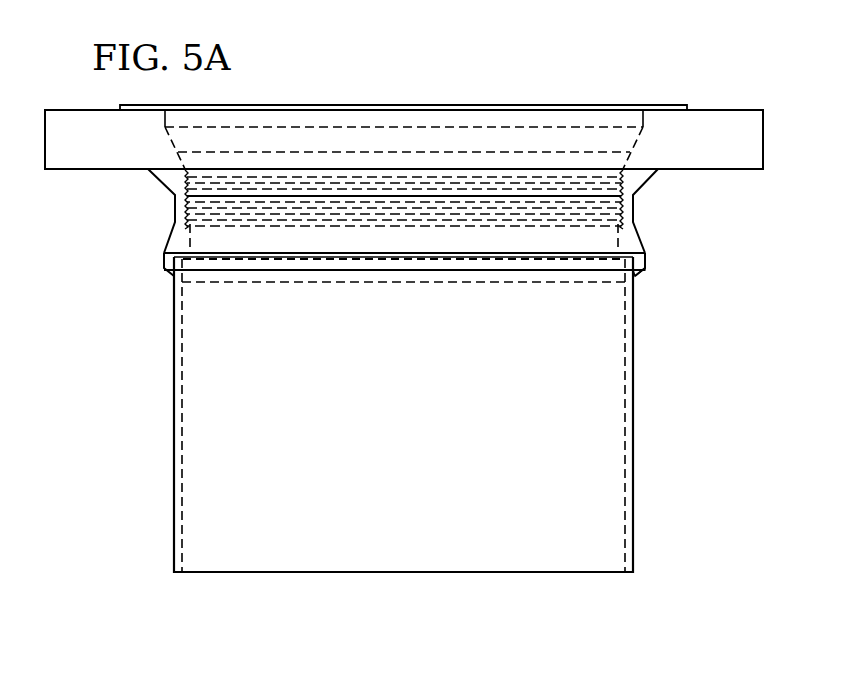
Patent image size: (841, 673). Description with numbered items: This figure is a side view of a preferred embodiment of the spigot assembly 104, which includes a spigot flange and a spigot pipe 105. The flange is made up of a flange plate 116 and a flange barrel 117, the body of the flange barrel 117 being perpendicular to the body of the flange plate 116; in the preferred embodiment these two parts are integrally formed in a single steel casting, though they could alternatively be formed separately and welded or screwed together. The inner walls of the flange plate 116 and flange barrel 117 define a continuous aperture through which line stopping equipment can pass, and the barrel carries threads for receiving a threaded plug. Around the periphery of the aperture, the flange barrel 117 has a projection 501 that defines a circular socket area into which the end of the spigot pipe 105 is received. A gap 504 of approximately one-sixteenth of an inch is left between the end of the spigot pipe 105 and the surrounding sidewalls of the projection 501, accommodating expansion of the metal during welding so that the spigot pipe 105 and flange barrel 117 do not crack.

The spigot assembly 104 is at (558, 58).
The flange plate 116 is at (718, 108).
The flange barrel 117 is at (634, 207).
The projection 501 is at (648, 258).
The gap 504 is at (636, 276).
The spigot pipe 105 is at (634, 395).